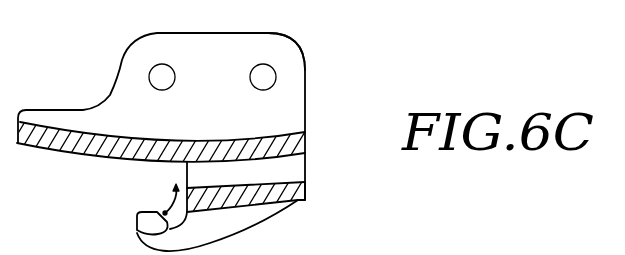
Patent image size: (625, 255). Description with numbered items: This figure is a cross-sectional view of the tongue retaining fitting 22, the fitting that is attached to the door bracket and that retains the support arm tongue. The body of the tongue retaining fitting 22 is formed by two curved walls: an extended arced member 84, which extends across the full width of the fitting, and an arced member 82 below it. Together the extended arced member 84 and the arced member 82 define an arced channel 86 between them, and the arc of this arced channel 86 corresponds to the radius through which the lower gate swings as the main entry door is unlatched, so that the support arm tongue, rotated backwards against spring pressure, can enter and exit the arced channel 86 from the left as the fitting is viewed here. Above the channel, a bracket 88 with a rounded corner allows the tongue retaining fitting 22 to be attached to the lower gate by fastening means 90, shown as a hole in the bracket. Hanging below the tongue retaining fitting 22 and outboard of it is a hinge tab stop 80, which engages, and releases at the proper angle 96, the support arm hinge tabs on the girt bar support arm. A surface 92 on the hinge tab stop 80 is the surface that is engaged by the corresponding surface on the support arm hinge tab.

The tongue retaining fitting 22 is at (314, 116).
The hinge tab stop 80 is at (232, 225).
The arced member 82 is at (300, 198).
The extended arced member 84 is at (296, 147).
The arced channel 86 is at (296, 171).
The bracket 88 is at (297, 46).
The fastening means 90 is at (253, 83).
The surface 92 is at (137, 233).
The proper angle 96 is at (170, 203).